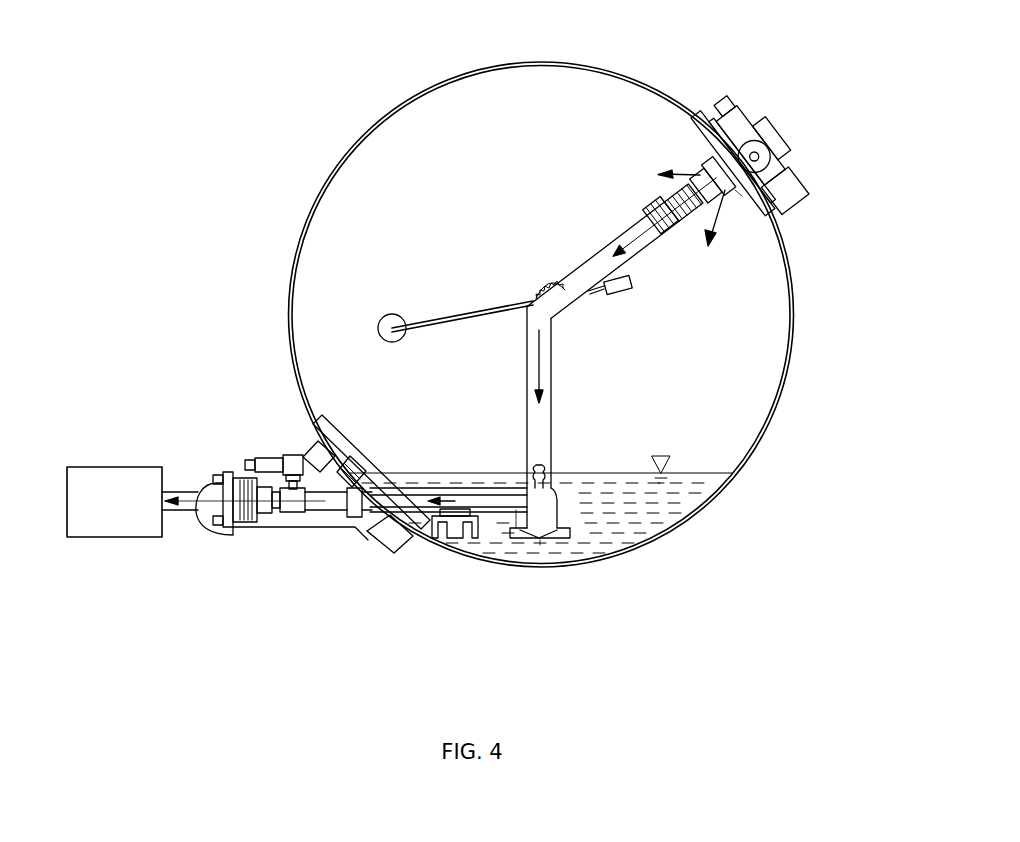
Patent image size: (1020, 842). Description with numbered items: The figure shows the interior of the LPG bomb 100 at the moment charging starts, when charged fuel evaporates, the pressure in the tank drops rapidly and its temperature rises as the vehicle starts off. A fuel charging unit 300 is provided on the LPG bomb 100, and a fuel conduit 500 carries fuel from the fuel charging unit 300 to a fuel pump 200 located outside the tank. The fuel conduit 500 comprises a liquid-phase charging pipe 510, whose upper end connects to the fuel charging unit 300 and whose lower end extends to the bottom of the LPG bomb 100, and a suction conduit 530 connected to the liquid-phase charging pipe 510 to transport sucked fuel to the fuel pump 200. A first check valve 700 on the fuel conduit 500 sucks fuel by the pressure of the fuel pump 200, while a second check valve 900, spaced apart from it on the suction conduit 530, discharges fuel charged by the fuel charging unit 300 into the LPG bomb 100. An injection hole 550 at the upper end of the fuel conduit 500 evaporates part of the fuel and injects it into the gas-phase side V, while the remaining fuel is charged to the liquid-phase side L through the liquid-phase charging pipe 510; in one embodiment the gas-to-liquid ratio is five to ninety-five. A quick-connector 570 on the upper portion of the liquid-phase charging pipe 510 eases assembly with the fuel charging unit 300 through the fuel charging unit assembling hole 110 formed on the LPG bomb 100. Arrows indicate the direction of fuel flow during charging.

The LPG bomb 100 is at (300, 233).
The gas-phase side V is at (452, 117).
The liquid-phase side L is at (498, 550).
The fuel pump 200 is at (108, 540).
The fuel charging unit 300 is at (744, 122).
The fuel charging unit assembling hole 110 is at (797, 210).
The fuel conduit 500 is at (524, 353).
The liquid-phase charging pipe 510 is at (543, 412).
The suction conduit 530 is at (565, 537).
The injection hole 550 is at (727, 192).
The quick-connector 570 is at (718, 193).
The first check valve 700 is at (545, 545).
The second check valve 900 is at (452, 543).